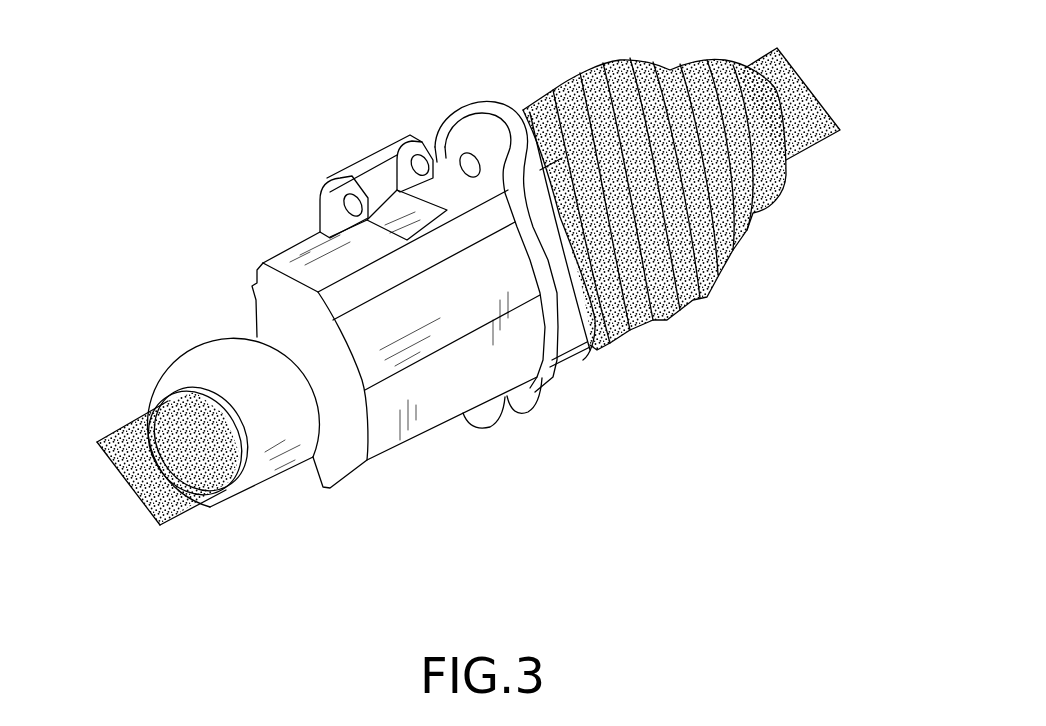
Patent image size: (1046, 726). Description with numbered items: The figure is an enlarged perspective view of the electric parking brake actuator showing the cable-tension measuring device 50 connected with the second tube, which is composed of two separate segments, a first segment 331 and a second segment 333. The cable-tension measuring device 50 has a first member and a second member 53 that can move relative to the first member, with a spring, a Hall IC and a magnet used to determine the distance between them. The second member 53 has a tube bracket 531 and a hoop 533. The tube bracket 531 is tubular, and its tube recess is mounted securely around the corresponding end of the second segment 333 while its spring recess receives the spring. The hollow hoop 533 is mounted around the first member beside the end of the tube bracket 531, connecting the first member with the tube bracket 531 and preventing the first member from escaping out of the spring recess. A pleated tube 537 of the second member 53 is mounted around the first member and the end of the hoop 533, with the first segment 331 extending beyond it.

The cable-tension measuring device 50 is at (445, 70).
The second member 53 is at (318, 163).
The tube bracket 531 is at (231, 318).
The hoop 533 is at (584, 358).
The pleated tube 537 is at (636, 64).
The first segment 331 is at (810, 136).
The second segment 333 is at (131, 432).